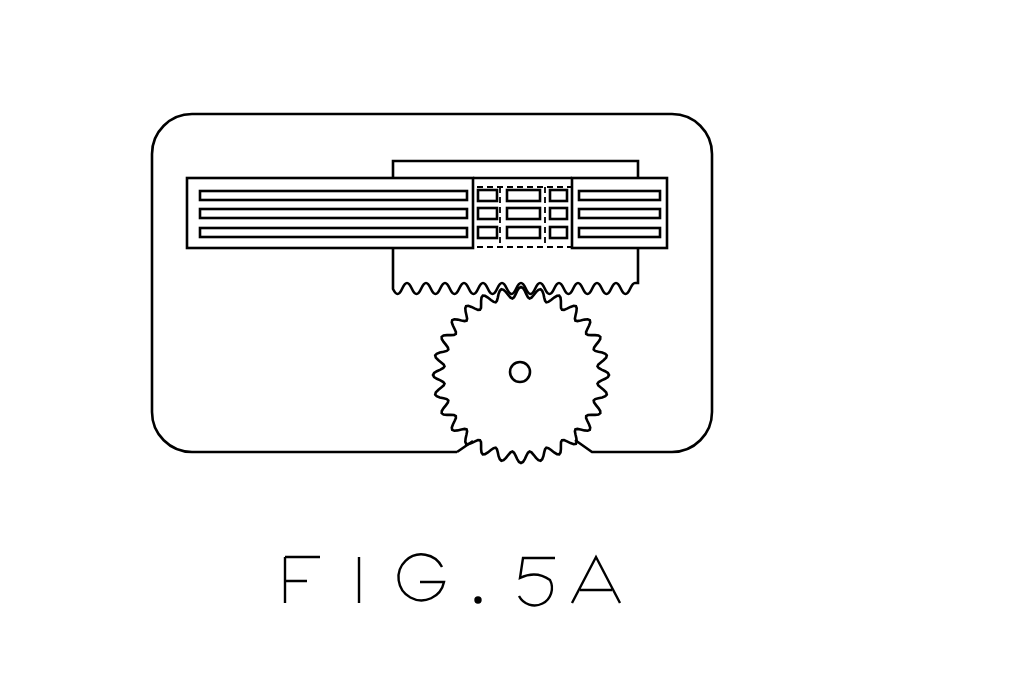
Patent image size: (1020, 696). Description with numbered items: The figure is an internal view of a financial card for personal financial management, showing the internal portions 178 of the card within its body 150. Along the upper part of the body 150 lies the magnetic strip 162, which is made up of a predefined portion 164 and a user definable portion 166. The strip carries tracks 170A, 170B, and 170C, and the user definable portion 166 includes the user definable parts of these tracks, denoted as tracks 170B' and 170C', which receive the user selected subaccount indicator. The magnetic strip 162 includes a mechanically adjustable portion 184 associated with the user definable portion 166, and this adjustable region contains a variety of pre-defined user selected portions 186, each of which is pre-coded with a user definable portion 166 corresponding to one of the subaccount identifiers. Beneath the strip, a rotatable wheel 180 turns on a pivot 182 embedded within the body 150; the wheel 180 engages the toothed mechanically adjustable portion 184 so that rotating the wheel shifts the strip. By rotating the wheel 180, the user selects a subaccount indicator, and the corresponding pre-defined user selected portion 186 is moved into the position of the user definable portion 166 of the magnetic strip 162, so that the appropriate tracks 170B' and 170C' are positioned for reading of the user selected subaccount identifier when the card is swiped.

The body 150 is at (152, 240).
The magnetic strip 162 is at (235, 178).
The predefined portion 164 is at (345, 212).
The user definable portion 166 is at (570, 168).
The track 170A is at (287, 192).
The track 170B is at (436, 173).
The track 170C is at (457, 267).
The user definable portion of track 170B' is at (663, 266).
The user definable portion of track 170C' is at (658, 295).
The internal portions 178 is at (210, 342).
The rotatable wheel 180 is at (470, 390).
The pivot 182 is at (532, 372).
The mechanically adjustable portion 184 is at (610, 160).
The pre-defined user selected portions 186 is at (513, 190).